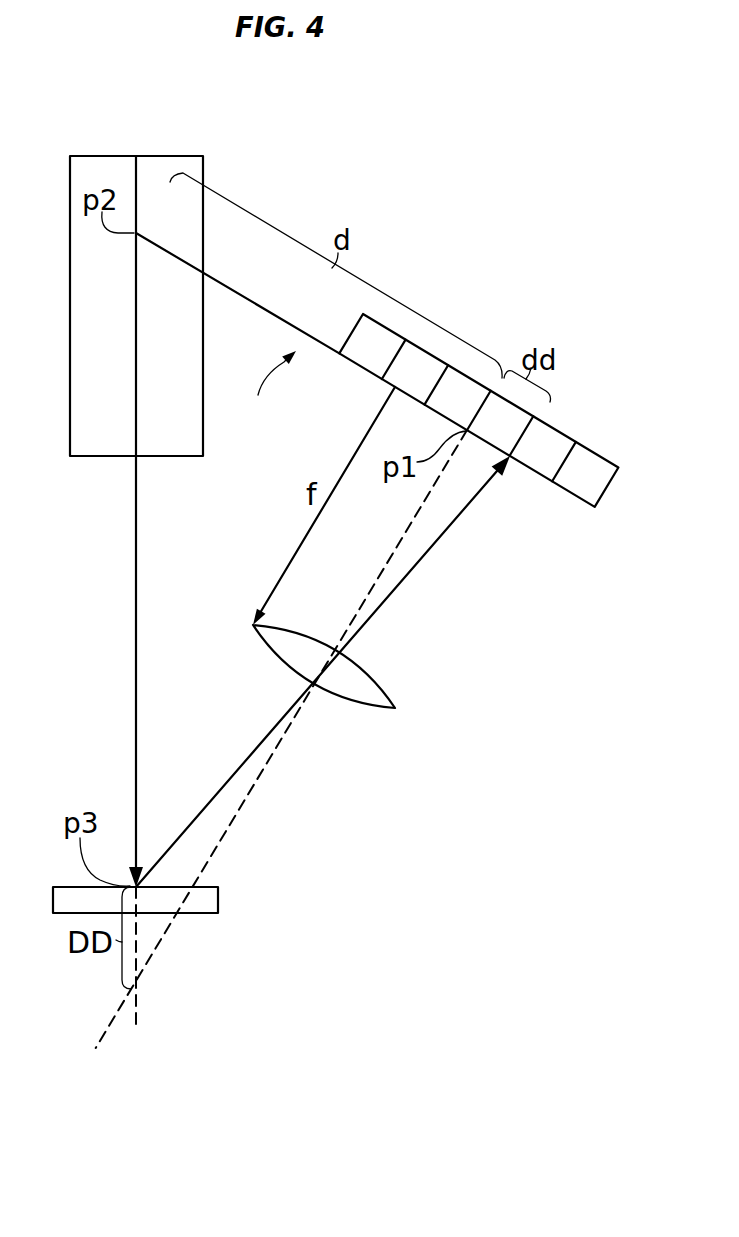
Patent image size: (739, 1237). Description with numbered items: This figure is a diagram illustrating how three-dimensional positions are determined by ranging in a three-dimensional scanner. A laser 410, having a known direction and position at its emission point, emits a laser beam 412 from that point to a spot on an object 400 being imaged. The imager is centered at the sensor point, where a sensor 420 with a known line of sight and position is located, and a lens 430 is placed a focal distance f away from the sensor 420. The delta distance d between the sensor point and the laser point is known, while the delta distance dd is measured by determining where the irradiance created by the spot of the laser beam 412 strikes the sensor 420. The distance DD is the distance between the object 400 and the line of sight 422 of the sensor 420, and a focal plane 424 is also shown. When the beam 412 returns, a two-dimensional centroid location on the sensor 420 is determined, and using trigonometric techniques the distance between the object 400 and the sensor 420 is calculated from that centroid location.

The object 400 is at (218, 893).
The laser 410 is at (192, 156).
The laser beam 412 is at (134, 622).
The sensor 420 is at (568, 436).
The line of sight 422 is at (162, 942).
The focal plane 424 is at (268, 386).
The lens 430 is at (382, 688).